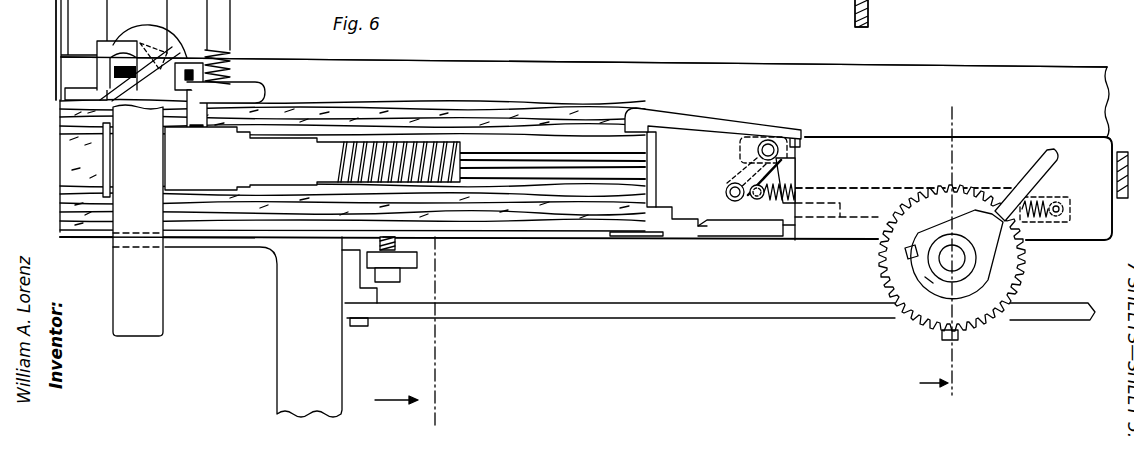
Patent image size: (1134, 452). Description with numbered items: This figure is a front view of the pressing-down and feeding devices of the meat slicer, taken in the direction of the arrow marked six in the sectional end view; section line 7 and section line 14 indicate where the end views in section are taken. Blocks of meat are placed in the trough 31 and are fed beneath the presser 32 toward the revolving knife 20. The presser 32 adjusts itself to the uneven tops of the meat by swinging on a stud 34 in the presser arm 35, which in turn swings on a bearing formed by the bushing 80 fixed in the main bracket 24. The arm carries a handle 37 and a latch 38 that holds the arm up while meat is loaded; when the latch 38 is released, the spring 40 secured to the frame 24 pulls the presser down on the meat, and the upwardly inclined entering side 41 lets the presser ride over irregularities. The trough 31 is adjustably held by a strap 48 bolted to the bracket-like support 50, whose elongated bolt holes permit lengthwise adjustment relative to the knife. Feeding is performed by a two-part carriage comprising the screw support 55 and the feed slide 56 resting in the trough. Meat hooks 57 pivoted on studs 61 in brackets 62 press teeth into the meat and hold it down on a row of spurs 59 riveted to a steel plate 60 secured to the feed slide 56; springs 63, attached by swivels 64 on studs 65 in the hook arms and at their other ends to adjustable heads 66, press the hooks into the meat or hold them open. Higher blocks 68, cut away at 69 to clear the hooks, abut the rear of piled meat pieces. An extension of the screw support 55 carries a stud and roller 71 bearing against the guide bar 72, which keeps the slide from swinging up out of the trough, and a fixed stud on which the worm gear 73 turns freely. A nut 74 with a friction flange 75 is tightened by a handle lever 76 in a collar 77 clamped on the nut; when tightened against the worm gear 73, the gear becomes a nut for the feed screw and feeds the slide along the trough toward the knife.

The section line 7— 7 is at (406, 344).
The section line 14— 14 is at (942, 253).
The knife 20 is at (56, 8).
The main bracket 24 is at (277, 321).
The trough 31 is at (97, 235).
The presser 32 is at (68, 95).
The stud 34 is at (98, 50).
The presser arm 35 is at (167, 38).
The handle 37 is at (243, 93).
The latch 38 is at (185, 62).
The spring 40 is at (229, 55).
The entering side of the presser 41 is at (143, 80).
The strap 48 is at (396, 243).
The bracket-like support 50 is at (418, 262).
The screw support 55 is at (1020, 137).
The feed slide 56 is at (780, 240).
The meat hooks 57 is at (705, 118).
The spurs 59 is at (628, 237).
The steel plate 60 is at (700, 237).
The studs 61 is at (770, 145).
The brackets 62 is at (783, 172).
The springs 63 is at (772, 201).
The swivels 64 is at (727, 198).
The studs 65 is at (731, 189).
The heads 66 is at (1070, 222).
The blocks 68 is at (657, 182).
The cut-away 69 is at (657, 150).
The stud and roller 71 is at (711, 13).
The guide bar 72 is at (707, 312).
The worm gear 73 is at (970, 310).
The nut 74 is at (953, 232).
The friction flange 75 is at (987, 278).
The handle lever 76 is at (1053, 160).
The collar 77 is at (922, 263).
The bushing 80 is at (77, 180).